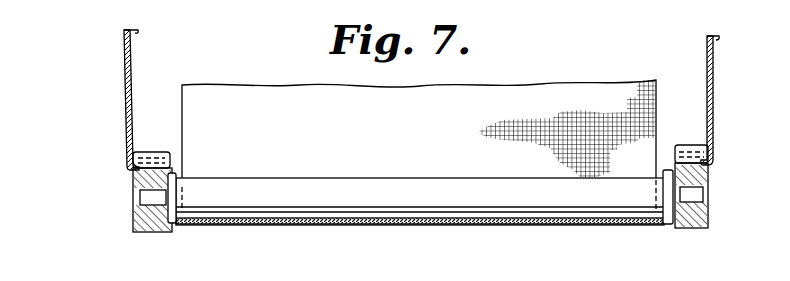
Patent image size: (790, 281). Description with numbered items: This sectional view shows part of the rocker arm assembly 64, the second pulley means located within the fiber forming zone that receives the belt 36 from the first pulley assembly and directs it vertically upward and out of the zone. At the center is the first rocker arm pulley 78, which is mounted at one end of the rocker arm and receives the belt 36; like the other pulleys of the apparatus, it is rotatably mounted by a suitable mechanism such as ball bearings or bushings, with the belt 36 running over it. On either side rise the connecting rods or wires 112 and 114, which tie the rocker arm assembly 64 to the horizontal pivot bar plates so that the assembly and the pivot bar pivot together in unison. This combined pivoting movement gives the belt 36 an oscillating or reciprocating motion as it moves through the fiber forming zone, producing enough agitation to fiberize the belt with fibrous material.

The connecting rod or wire 112 is at (126, 49).
The connecting rod or wire 114 is at (705, 58).
The belt 36 is at (283, 104).
The first rocker arm pulley 78 is at (358, 196).
The rocker arm assembly 64 is at (466, 228).